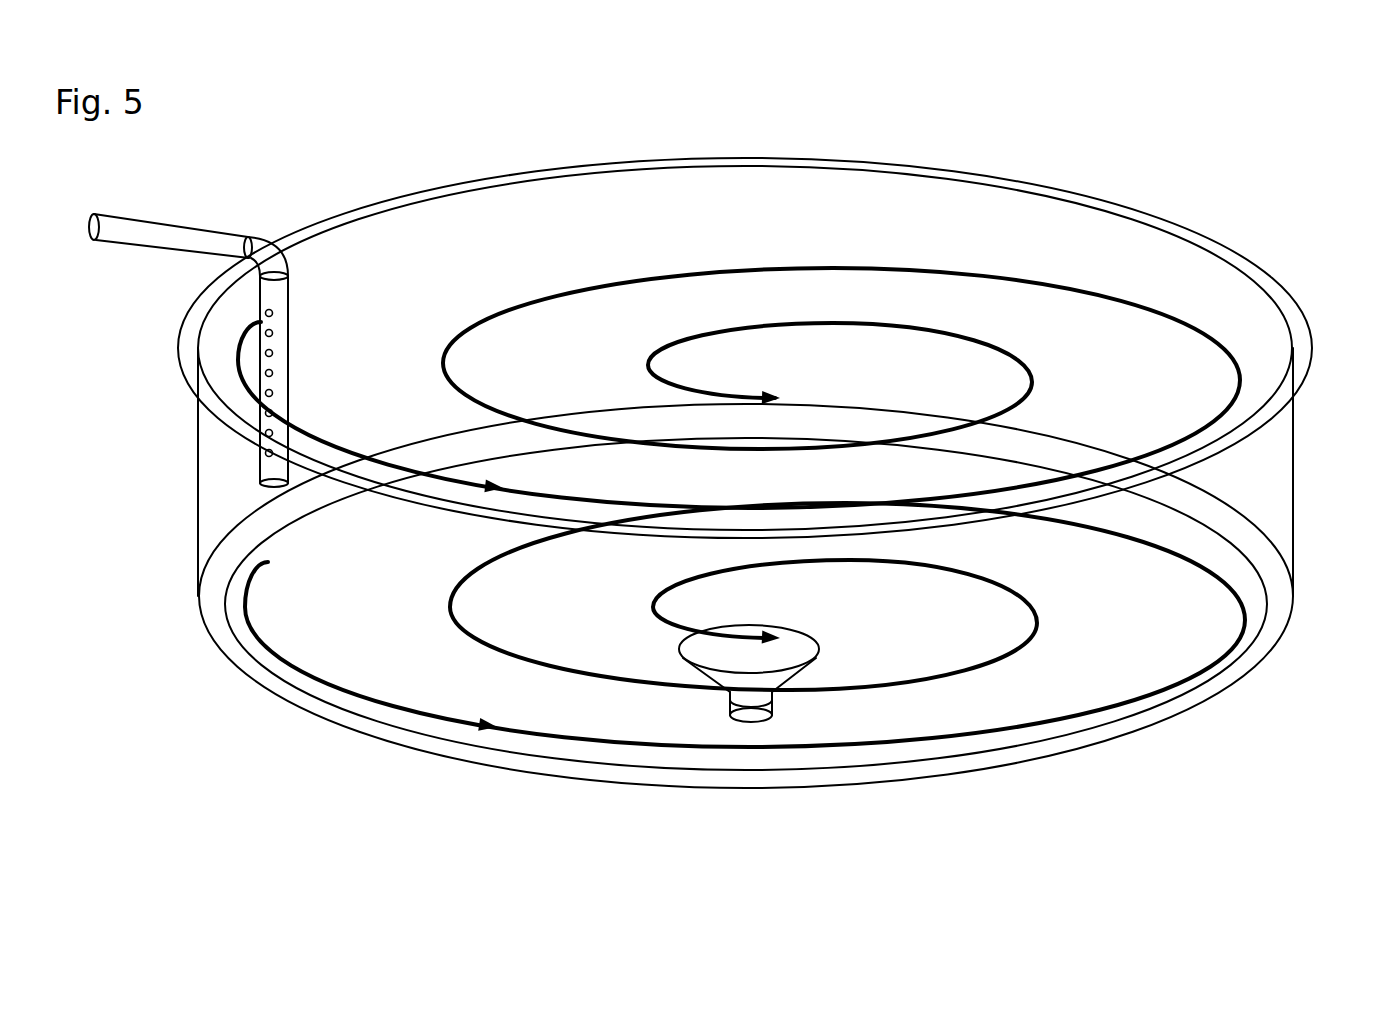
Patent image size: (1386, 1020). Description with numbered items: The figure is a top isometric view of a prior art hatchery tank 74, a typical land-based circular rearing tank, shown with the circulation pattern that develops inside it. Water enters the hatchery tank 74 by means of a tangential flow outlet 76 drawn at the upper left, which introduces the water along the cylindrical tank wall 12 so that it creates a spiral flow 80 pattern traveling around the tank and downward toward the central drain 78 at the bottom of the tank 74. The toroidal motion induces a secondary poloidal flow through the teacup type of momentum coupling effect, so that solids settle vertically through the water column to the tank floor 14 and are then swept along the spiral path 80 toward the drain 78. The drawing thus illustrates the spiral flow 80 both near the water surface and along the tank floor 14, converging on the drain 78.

The tank 12 is at (193, 478).
The tank bottom 14 is at (323, 722).
The hatchery tank 74 is at (1309, 495).
The tangential flow outlet 76 is at (158, 257).
The drain 78 is at (794, 655).
The spiral flow 80 is at (629, 274).